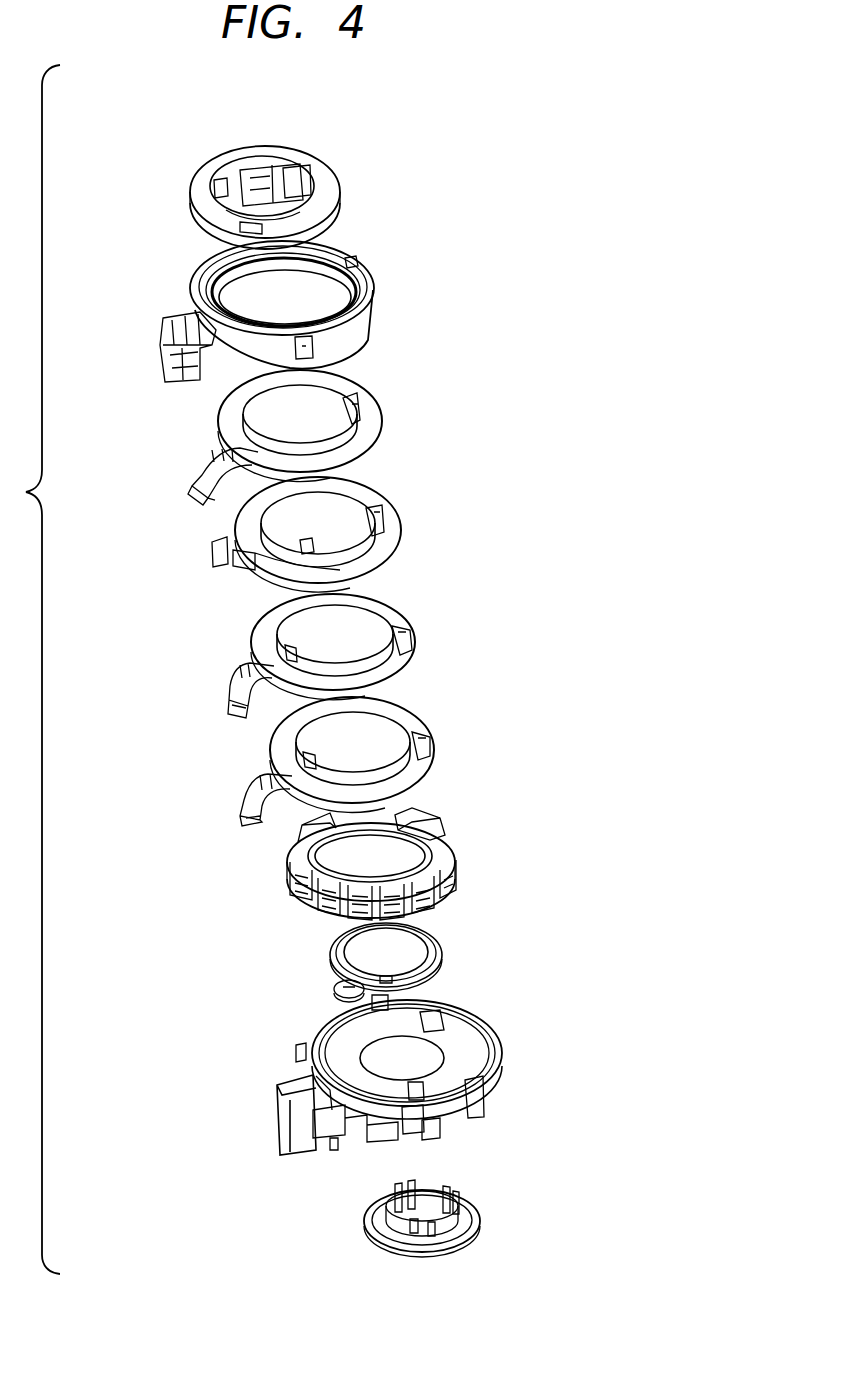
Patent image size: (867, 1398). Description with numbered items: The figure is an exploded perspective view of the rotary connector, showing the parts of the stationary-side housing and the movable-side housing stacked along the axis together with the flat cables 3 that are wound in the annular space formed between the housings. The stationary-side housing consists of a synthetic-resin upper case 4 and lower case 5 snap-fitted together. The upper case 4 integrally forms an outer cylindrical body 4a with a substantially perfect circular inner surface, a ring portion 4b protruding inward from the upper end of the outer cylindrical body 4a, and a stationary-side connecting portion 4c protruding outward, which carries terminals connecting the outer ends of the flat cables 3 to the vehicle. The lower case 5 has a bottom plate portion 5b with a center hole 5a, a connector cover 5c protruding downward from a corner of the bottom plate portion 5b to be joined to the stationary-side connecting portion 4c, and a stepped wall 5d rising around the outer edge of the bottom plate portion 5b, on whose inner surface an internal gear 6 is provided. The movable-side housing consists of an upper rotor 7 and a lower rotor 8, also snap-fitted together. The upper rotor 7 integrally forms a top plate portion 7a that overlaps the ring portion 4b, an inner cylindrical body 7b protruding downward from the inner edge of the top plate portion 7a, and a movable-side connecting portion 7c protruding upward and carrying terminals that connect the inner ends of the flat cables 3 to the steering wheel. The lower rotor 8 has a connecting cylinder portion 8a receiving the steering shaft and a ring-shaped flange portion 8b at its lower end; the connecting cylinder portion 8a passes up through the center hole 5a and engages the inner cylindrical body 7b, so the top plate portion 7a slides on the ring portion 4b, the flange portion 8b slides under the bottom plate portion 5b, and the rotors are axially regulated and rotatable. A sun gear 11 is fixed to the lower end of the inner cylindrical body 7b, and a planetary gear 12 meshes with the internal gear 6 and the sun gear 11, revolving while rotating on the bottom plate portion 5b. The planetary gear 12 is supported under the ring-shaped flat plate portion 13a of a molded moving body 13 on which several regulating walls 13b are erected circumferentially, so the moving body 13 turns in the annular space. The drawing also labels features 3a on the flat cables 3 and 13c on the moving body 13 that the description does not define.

The flat cable 3 is at (390, 396).
The terminal tab 3a is at (268, 458).
The upper case 4 is at (276, 311).
The outer cylindrical body 4a is at (378, 312).
The ring portion 4b is at (215, 272).
The stationary-side connecting portion 4c is at (165, 336).
The lower case 5 is at (387, 1058).
The center hole 5a is at (395, 1048).
The bottom plate portion 5b is at (455, 1062).
The connector cover 5c is at (283, 1140).
The stepped wall 5d is at (318, 1034).
The internal gear 6 is at (430, 1022).
The upper rotor 7 is at (264, 162).
The top plate portion 7a is at (200, 176).
The inner cylindrical body 7b is at (312, 222).
The movable-side connecting portion 7c is at (332, 184).
The lower rotor 8 is at (417, 1219).
The connecting cylinder portion 8a is at (385, 1205).
The flange portion 8b is at (378, 1233).
The sun gear 11 is at (440, 933).
The planetary gear 12 is at (338, 987).
The moving body 13 is at (358, 855).
The flat plate portion 13a is at (300, 883).
The regulating wall 13b is at (300, 844).
The stator coil 13c is at (445, 868).